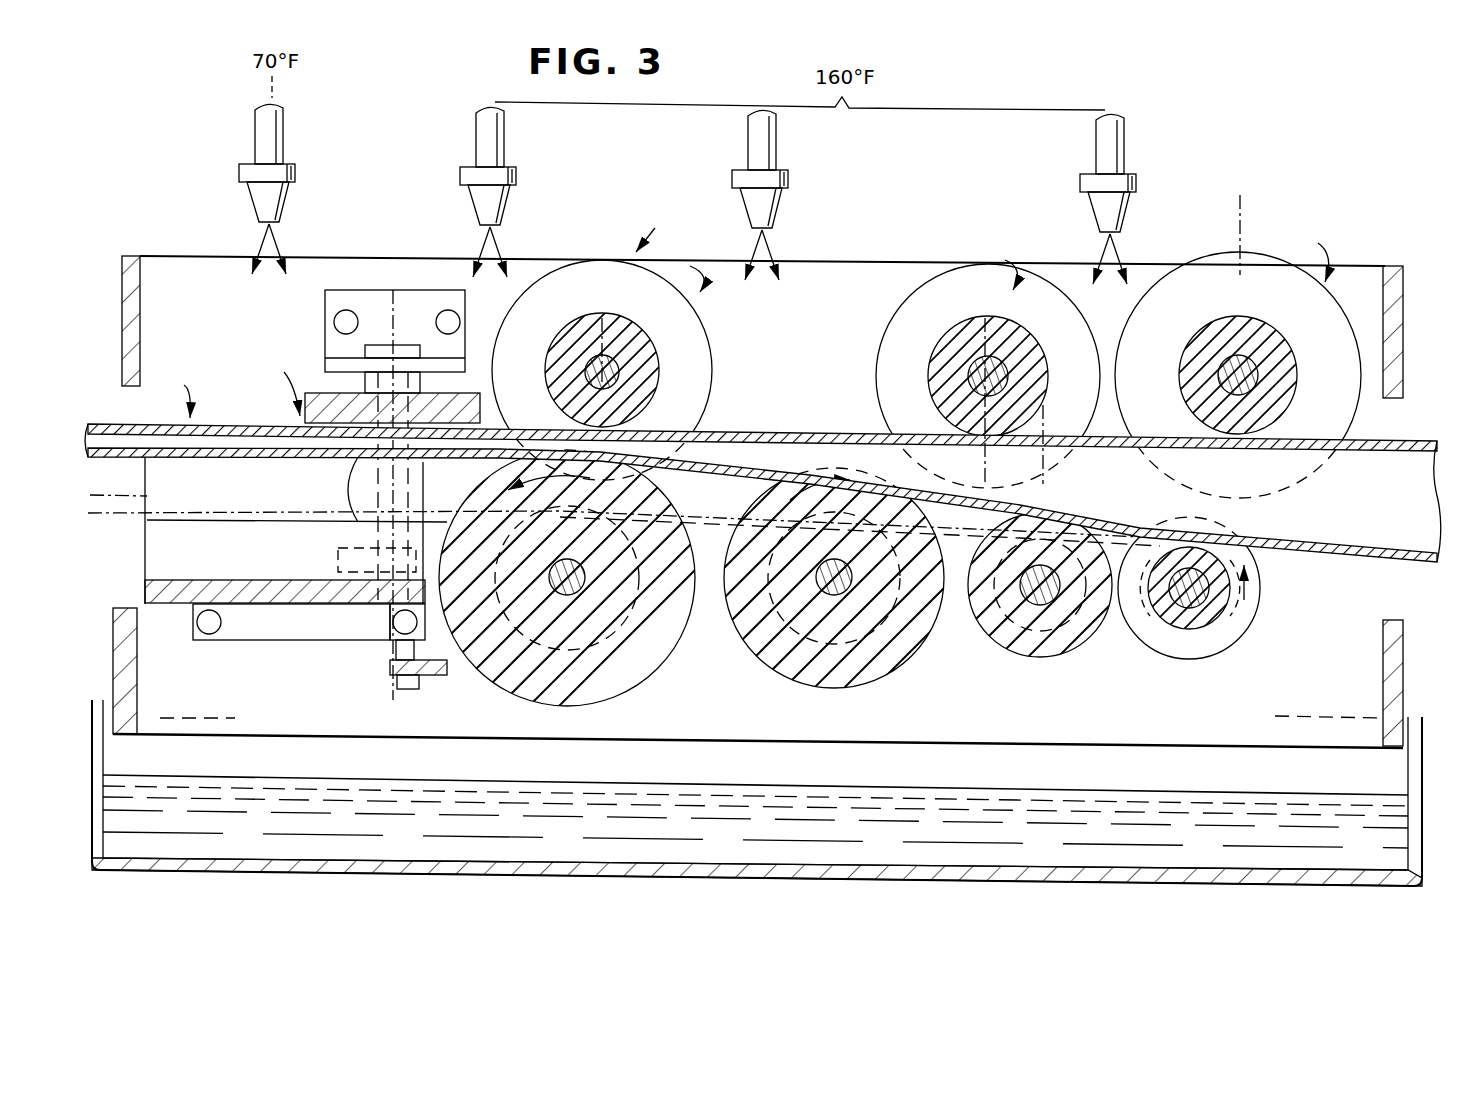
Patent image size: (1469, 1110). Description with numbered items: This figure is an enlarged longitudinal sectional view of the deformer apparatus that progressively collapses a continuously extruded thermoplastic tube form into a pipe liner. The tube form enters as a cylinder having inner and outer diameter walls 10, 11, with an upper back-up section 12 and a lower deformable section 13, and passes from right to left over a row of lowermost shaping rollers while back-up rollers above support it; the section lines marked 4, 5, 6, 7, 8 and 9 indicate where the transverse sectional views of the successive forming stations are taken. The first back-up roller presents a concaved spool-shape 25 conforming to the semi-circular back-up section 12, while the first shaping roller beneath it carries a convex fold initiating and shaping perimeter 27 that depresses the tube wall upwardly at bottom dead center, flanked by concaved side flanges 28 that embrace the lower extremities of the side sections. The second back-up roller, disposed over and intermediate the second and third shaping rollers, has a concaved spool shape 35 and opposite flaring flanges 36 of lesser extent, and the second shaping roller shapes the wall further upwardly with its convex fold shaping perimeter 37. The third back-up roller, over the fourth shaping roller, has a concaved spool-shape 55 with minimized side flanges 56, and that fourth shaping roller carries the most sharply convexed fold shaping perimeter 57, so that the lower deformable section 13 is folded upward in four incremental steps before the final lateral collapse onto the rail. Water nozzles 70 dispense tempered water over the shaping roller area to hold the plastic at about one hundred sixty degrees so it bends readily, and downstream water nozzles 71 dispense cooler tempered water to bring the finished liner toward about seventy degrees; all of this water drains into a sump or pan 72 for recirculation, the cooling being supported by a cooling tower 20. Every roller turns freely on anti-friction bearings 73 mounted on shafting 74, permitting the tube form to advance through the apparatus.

The section line 4- 4 is at (1214, 205).
The section line 5- 5 is at (955, 412).
The section line 6- 6 is at (966, 335).
The section line 7- 7 is at (575, 327).
The section line 8- 8 is at (378, 310).
The section line 9- 9 is at (97, 556).
The inner diameter wall 10 is at (1360, 455).
The outer diameter wall 11 is at (1400, 448).
The upper back-up section 12 is at (1165, 434).
The lower deformable section 13 is at (1290, 556).
The cooling tower 20 is at (1146, 334).
The concaved spool-shape 25 is at (1266, 331).
The convex fold initiating and shaping perimeter 27 is at (1232, 610).
The concaved side flanges 28 is at (1150, 656).
The concaved spool shape 35 is at (965, 352).
The flaring flanges 36 is at (883, 350).
The convex fold shaping perimeter 37 is at (1082, 638).
The concaved spool-shape 55 is at (650, 340).
The minimized side flanges 56 is at (672, 420).
The convexed fold shaping perimeter 57 is at (670, 648).
The water nozzles 70 is at (504, 214).
The water nozzles 71 is at (282, 212).
The sump or pan 72 is at (455, 872).
The bearings 73 is at (348, 573).
The shafting 74 is at (577, 404).